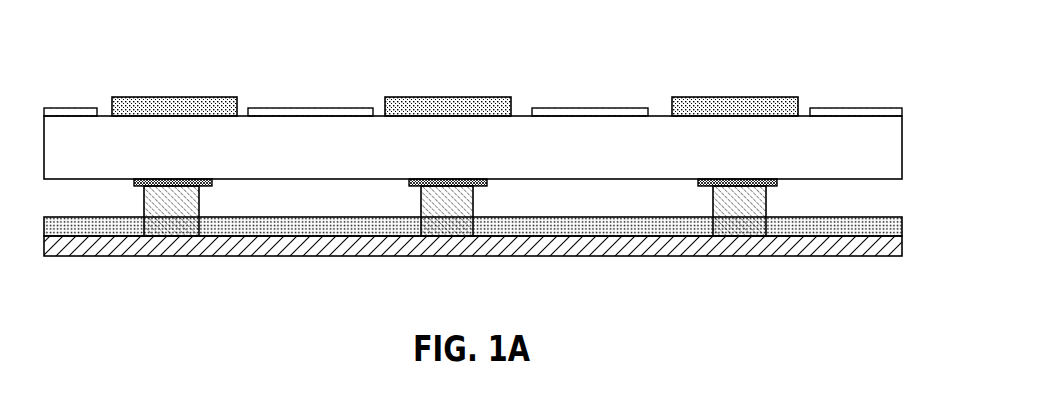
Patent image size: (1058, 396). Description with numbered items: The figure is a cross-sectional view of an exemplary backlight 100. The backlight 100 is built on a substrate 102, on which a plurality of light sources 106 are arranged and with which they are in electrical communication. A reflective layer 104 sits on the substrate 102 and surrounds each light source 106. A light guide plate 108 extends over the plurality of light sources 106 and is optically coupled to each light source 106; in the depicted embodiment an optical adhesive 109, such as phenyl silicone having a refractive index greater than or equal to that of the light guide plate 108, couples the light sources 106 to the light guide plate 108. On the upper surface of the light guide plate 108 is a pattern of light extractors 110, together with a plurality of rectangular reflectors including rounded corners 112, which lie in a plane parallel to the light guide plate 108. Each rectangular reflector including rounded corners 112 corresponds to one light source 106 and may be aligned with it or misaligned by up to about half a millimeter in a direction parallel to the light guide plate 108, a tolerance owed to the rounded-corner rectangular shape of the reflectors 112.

The backlight 100 is at (558, 59).
The substrate 102 is at (885, 251).
The reflective layer 104 is at (885, 226).
The light sources 106 is at (168, 225).
The light guide plate 108 is at (912, 166).
The optical adhesive 109 is at (212, 186).
The pattern of light extractors 110 is at (893, 111).
The rectangular reflectors including rounded corners 112 is at (173, 105).